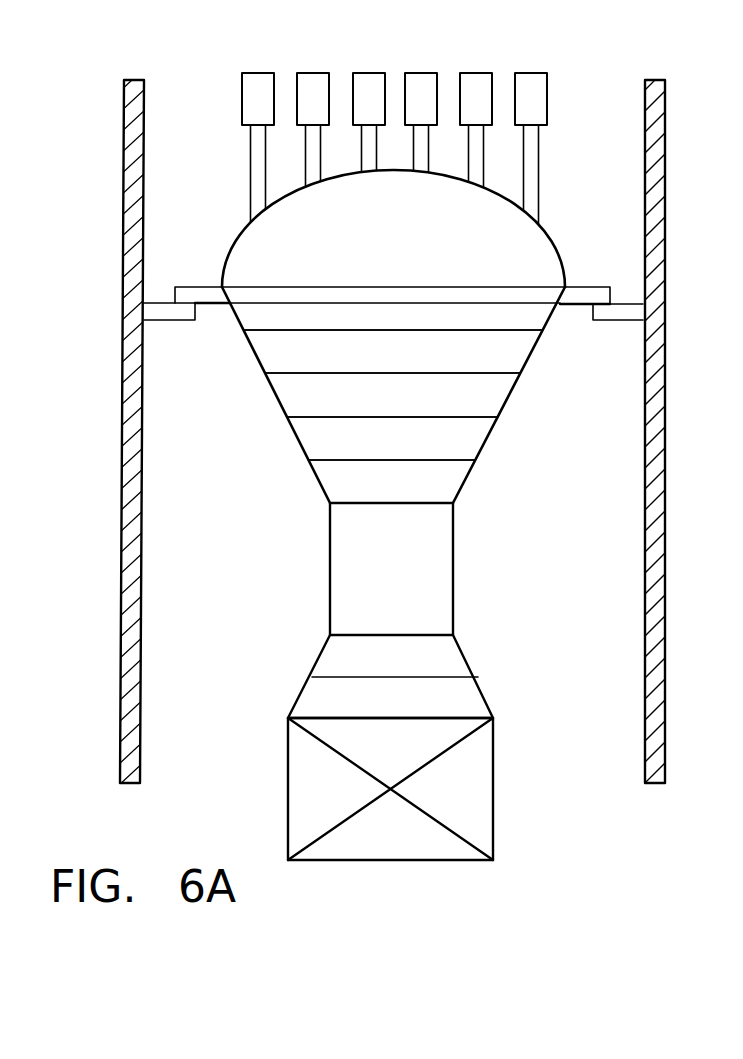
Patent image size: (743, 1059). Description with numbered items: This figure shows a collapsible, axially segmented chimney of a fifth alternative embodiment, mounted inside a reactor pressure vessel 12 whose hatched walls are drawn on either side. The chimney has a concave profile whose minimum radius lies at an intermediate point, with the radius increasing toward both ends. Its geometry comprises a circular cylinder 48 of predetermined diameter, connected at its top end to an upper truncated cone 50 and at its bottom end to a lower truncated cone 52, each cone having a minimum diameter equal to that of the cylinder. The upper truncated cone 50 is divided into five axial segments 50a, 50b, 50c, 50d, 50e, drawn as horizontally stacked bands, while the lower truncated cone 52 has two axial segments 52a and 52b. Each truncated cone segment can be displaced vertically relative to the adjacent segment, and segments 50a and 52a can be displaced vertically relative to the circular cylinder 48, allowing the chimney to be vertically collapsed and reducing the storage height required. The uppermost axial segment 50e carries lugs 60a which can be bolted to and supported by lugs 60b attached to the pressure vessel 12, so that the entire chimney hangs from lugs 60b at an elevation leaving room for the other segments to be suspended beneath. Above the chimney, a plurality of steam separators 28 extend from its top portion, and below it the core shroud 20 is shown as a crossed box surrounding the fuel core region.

The pressure vessel 12 is at (666, 402).
The core shroud 20 is at (493, 780).
The steam separators 28 is at (242, 104).
The circular cylinder 48 is at (455, 560).
The upper truncated cone 50 is at (500, 435).
The axial segment 50a is at (312, 482).
The axial segment 50b is at (292, 440).
The axial segment 50c is at (273, 398).
The axial segment 50d is at (252, 358).
The uppermost axial segment 50e is at (233, 316).
The lower truncated cone 52 is at (369, 664).
The axial segment 52a is at (462, 655).
The axial segment 52b is at (480, 692).
The lugs 60a is at (568, 290).
The lugs 60b is at (630, 322).